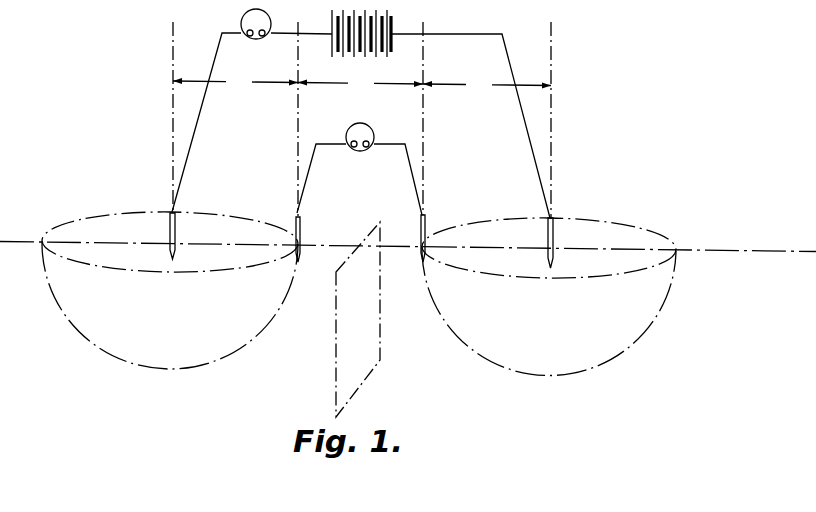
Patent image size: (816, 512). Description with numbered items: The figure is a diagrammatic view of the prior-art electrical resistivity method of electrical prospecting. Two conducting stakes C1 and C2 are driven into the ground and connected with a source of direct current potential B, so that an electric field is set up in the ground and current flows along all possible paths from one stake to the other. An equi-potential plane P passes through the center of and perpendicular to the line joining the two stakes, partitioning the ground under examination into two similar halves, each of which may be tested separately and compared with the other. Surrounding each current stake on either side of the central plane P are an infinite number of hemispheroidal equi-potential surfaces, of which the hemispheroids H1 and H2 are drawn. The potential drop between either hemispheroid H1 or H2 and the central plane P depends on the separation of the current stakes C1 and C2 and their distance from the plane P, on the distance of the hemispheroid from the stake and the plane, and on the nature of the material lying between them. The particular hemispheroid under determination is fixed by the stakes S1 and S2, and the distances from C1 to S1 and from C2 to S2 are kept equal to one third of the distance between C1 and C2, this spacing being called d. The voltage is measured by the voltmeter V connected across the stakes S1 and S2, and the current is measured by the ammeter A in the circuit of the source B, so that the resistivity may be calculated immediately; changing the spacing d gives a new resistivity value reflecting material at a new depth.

The conducting stake C1 is at (174, 228).
The conducting stake C2 is at (553, 232).
The stake S1 is at (300, 238).
The stake S2 is at (425, 235).
The hemispheroid H1 is at (167, 370).
The hemispheroid H2 is at (504, 371).
The equi-potential plane P is at (357, 392).
The ammeter A is at (256, 24).
The voltmeter V is at (360, 137).
The source of direct current potential B is at (393, 32).
The distance d is at (362, 84).